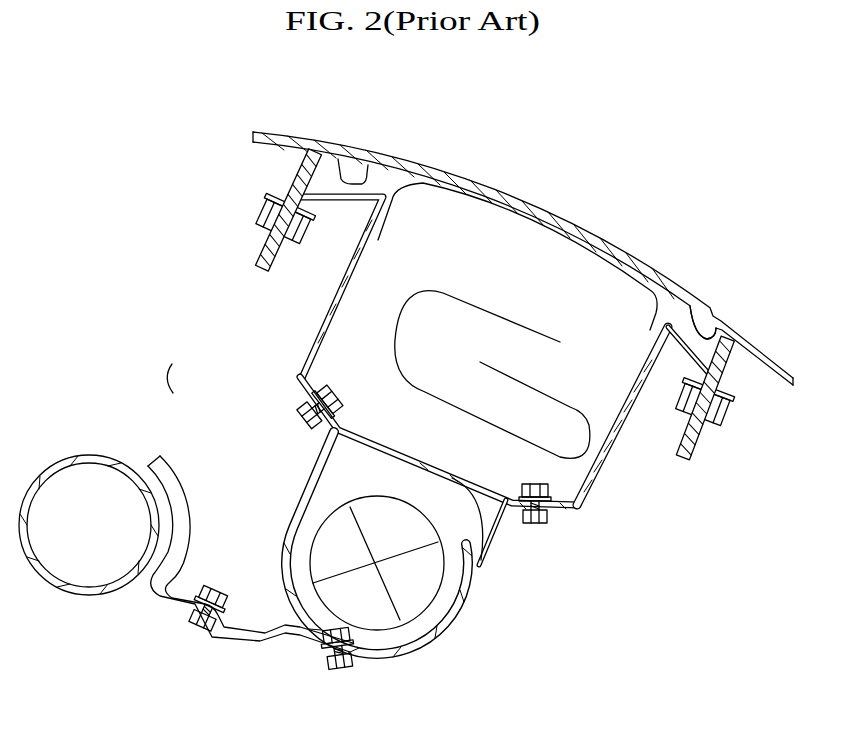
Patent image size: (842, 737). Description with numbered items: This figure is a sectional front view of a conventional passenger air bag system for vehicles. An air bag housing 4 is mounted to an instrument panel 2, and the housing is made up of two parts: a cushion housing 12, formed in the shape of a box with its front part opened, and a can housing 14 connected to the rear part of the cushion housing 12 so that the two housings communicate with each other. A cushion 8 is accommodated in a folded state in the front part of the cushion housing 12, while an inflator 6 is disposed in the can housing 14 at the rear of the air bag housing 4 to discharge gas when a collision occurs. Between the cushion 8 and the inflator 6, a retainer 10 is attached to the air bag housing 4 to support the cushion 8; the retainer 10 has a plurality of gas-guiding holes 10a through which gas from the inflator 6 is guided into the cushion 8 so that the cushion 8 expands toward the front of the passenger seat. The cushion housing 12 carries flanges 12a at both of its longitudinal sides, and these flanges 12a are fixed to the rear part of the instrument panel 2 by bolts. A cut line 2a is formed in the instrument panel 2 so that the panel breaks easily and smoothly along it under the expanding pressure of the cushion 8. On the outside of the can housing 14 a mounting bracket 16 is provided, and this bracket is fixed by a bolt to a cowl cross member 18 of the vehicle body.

The instrument panel 2 is at (398, 163).
The cut line 2a is at (545, 212).
The air bag housing 4 is at (162, 378).
The inflator 6 is at (418, 588).
The cushion 8 is at (614, 291).
The retainer 10 is at (575, 506).
The gas-guiding holes 10a is at (483, 568).
The cushion housing 12 is at (303, 380).
The flanges 12a is at (703, 360).
The can housing 14 is at (305, 488).
The mounting bracket 16 is at (303, 643).
The cowl cross member 18 is at (106, 596).